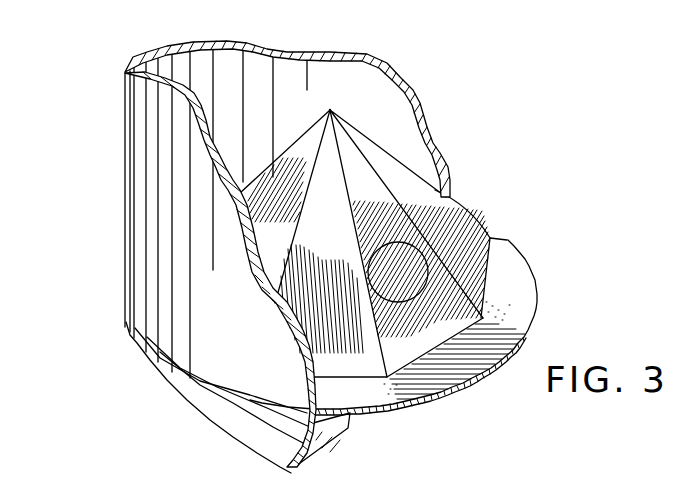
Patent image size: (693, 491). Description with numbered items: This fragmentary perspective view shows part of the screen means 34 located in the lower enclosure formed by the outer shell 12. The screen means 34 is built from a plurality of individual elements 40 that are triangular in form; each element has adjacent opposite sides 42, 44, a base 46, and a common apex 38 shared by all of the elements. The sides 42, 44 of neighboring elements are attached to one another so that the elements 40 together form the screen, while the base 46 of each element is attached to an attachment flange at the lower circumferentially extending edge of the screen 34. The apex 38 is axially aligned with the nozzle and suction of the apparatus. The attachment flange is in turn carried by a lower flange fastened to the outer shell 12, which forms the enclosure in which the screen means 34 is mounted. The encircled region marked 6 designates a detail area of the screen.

The outer shell 12 is at (124, 170).
The screen means 34 is at (383, 134).
The apex 38 is at (331, 110).
The individual elements 40 is at (414, 188).
The side 42 is at (295, 232).
The side 44 is at (361, 297).
The base 46 is at (431, 353).
The detail circle 6 is at (420, 250).